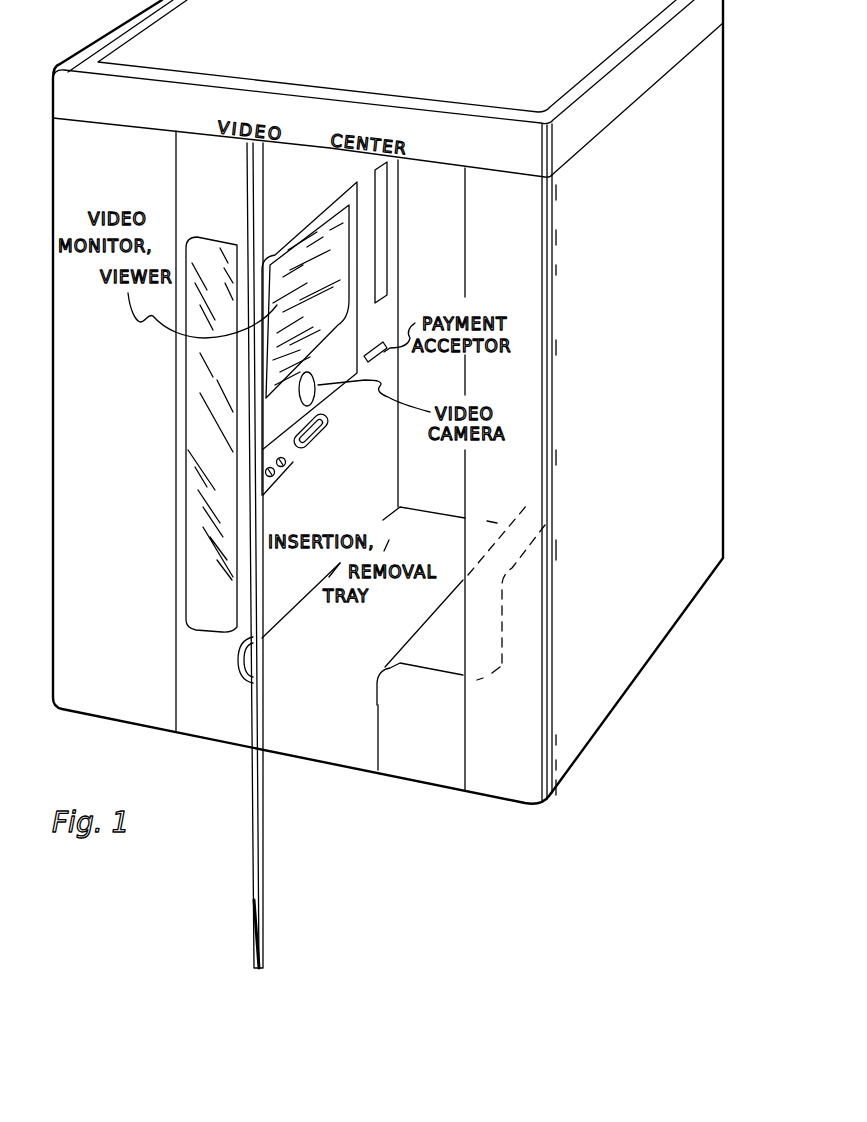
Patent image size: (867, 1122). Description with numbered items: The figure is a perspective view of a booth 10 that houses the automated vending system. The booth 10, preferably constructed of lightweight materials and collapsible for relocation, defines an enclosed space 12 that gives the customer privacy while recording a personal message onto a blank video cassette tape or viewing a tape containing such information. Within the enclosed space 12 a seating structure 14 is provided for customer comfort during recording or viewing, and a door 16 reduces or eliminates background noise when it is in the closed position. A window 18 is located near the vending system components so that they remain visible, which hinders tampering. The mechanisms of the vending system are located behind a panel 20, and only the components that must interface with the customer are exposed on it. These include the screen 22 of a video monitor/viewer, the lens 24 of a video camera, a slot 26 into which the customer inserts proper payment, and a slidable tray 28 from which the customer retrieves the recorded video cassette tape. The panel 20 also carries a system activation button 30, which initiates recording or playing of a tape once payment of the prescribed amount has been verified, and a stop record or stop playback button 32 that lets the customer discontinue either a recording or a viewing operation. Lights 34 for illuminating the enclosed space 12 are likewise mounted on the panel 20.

The booth 10 is at (683, 281).
The enclosed space 12 is at (447, 489).
The seating structure 14 is at (440, 620).
The door 16 is at (263, 837).
The window 18 is at (202, 575).
The panel 20 is at (280, 603).
The screen 22 is at (304, 252).
The lens 24 is at (310, 388).
The slot 26 is at (376, 357).
The slidable tray 28 is at (323, 438).
The system activation button 30 is at (283, 467).
The stop record or stop playback button 32 is at (267, 467).
The lights 34 is at (383, 243).